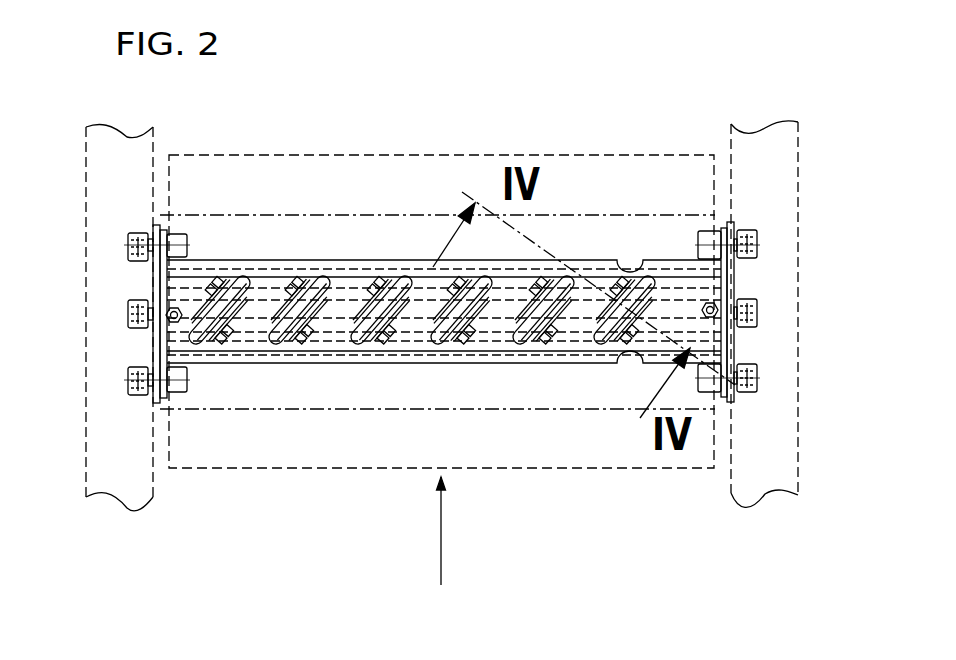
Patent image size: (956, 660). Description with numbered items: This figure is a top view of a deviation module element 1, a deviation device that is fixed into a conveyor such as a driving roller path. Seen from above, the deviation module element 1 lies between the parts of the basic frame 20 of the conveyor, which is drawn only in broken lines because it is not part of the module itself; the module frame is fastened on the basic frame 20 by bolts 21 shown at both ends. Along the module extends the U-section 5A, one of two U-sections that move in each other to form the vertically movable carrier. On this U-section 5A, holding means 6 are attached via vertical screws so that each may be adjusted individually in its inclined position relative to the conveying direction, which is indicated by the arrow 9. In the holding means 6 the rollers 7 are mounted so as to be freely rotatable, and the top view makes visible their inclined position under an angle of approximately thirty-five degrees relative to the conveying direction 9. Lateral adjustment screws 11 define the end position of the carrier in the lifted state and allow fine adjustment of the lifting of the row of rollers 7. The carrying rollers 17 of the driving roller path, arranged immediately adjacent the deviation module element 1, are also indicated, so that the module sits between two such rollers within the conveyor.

The deviation module element 1 is at (562, 473).
The U-section 5A is at (352, 318).
The holding means 6 is at (442, 234).
The rollers 7 is at (332, 268).
The arrow (conveying direction) 9 is at (441, 530).
The adjustment screws 11 is at (167, 318).
The carrying rollers 17 is at (283, 154).
The basic frame 20 is at (123, 180).
The bolts 21 is at (130, 250).